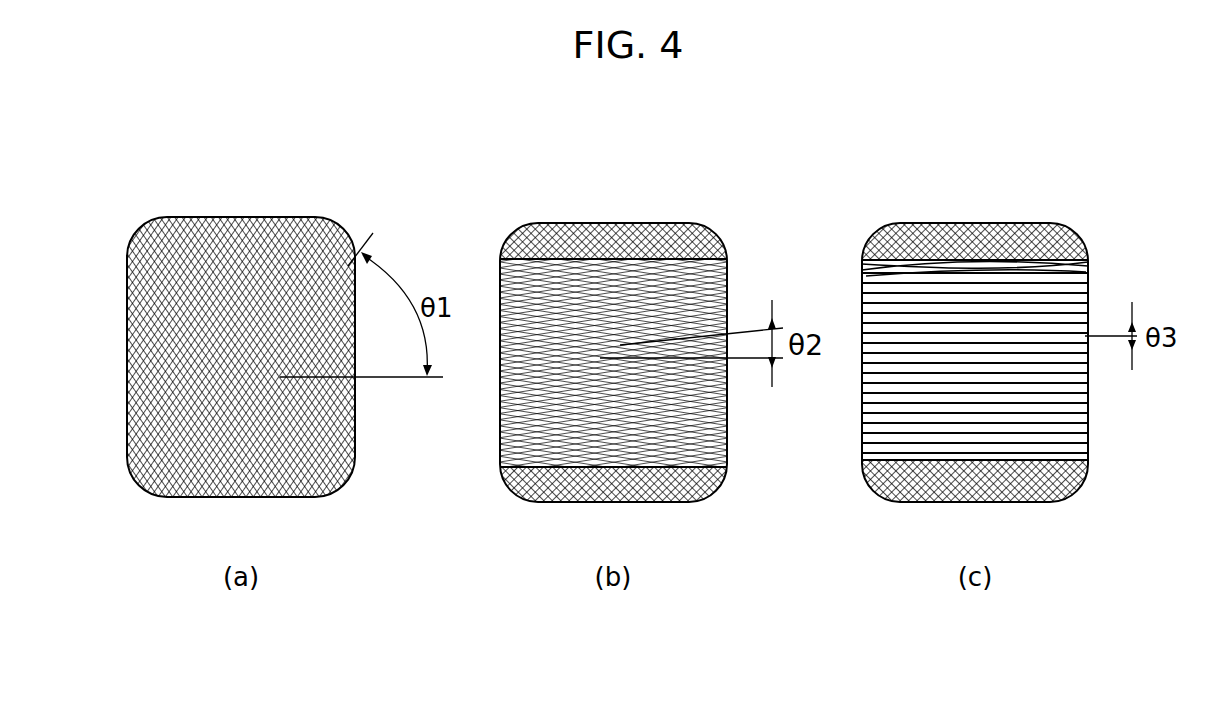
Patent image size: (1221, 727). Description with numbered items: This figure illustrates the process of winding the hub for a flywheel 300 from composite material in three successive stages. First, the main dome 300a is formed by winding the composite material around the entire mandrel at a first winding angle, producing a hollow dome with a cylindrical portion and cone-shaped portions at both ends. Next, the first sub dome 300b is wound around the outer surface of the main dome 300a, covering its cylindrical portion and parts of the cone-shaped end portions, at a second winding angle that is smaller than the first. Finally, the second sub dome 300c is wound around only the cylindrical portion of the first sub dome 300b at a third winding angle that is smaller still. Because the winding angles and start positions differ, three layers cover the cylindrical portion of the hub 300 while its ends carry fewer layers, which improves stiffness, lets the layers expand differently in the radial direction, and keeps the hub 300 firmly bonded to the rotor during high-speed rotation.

The hub for a flywheel 300 is at (236, 198).
The main dome 300a is at (302, 217).
The first sub dome 300b is at (500, 276).
The second sub dome 300c is at (862, 292).